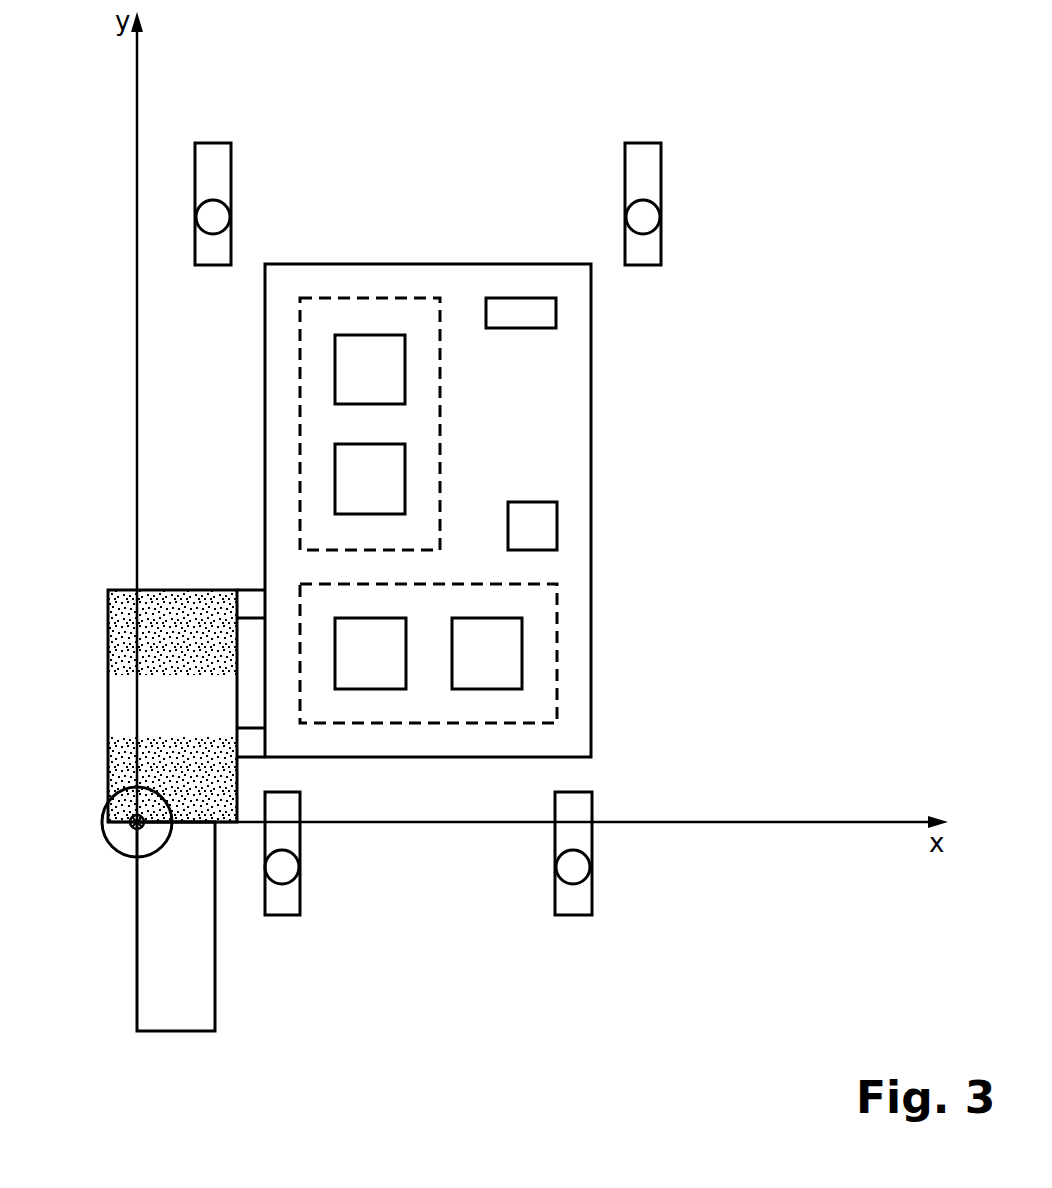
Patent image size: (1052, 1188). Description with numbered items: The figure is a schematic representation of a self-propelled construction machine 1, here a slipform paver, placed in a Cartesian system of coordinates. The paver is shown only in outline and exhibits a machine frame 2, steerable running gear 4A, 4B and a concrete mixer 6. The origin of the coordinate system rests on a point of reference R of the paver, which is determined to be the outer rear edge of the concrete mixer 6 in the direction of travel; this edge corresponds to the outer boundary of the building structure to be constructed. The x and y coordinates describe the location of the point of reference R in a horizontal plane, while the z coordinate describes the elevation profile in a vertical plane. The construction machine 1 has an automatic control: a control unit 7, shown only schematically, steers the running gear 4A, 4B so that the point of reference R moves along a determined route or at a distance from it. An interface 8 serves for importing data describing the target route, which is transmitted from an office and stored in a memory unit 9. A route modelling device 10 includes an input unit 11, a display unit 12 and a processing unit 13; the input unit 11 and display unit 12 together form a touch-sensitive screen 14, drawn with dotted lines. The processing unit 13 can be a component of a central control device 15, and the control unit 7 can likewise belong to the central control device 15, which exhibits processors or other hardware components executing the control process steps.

The self-propelled construction machine 1 is at (606, 484).
The machine frame 2 is at (420, 263).
The steerable running gear 4A is at (214, 142).
The steerable running gear 4B is at (284, 918).
The concrete mixer 6 is at (187, 589).
The control unit 7 is at (367, 689).
The interface 8 is at (525, 298).
The memory unit 9 is at (557, 520).
The route modelling device 10 is at (494, 446).
The input unit 11 is at (335, 377).
The display unit 12 is at (335, 479).
The processing unit 13 is at (481, 689).
The touch-sensitive screen 14 is at (345, 297).
The central control device 15 is at (557, 643).
The point of reference R is at (102, 831).
The z coordinate z is at (130, 829).